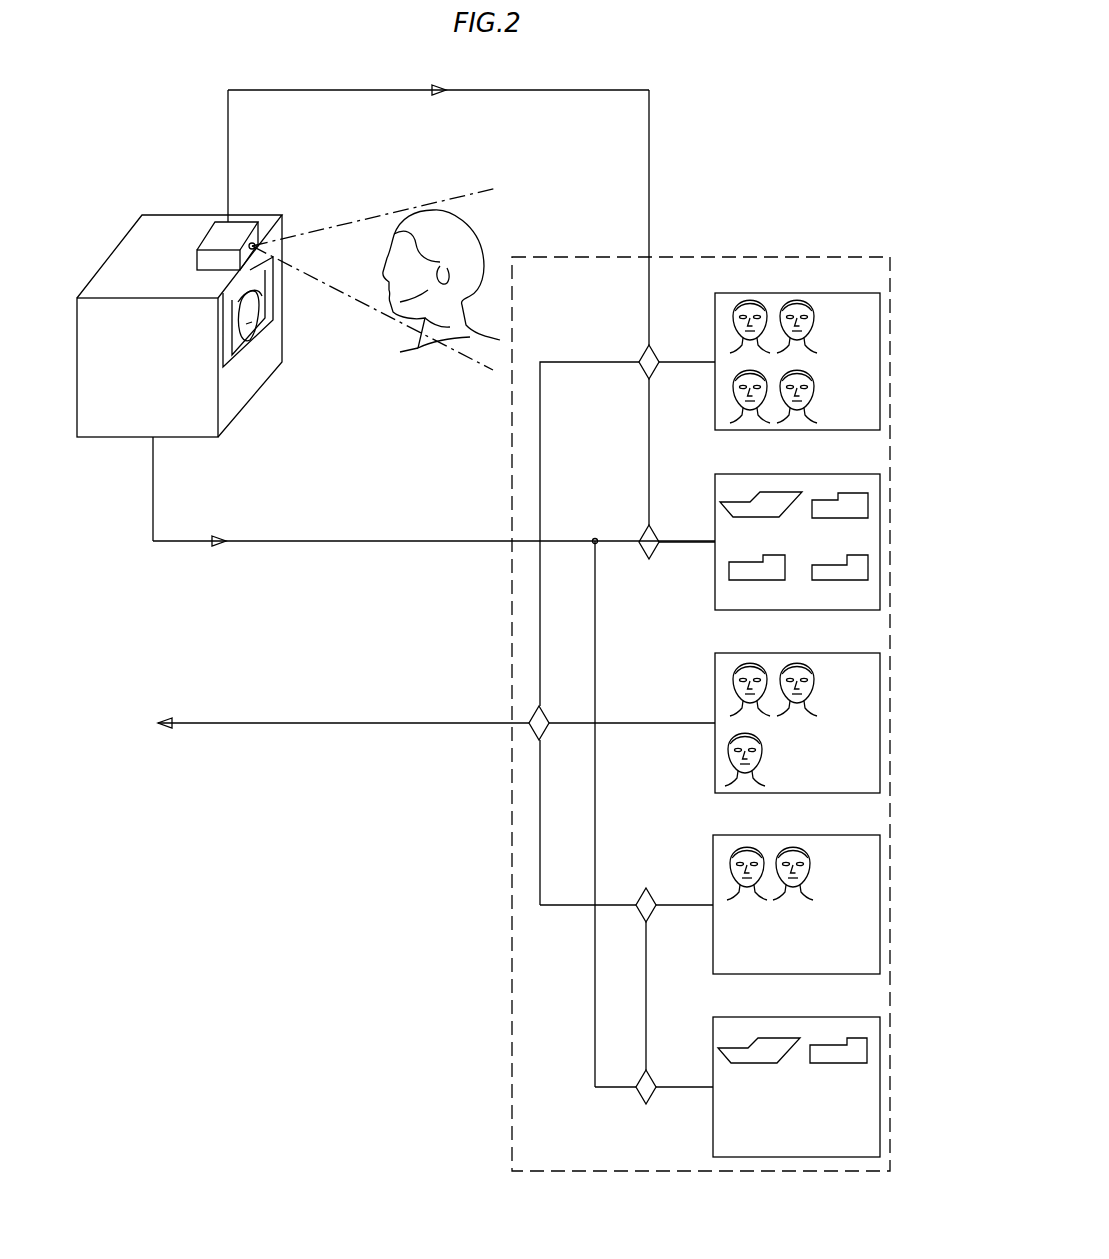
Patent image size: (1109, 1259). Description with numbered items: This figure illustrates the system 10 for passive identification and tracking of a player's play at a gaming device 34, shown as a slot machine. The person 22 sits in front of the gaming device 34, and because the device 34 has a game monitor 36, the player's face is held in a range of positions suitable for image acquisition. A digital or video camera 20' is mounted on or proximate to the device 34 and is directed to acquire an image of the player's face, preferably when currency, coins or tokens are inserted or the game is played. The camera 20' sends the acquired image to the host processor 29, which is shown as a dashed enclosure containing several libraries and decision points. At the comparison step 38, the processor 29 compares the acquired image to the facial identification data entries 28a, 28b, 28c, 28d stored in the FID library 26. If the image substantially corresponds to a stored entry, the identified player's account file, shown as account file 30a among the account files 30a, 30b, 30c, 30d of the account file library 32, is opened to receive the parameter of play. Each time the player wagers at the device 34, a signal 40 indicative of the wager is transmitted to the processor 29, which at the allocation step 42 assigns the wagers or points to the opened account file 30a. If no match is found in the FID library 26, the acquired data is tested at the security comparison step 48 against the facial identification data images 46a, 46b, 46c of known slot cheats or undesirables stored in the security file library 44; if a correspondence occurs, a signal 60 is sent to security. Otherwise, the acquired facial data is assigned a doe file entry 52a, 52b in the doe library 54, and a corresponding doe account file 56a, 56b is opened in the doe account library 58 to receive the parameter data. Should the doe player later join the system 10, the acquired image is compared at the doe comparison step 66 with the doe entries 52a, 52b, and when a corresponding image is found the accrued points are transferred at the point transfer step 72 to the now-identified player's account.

The system 10 is at (772, 168).
The digital or video camera 20' is at (199, 180).
The person 22 is at (495, 228).
The FID library 26 is at (799, 362).
The facial identification data entry 28a is at (735, 328).
The facial identification data entry 28b is at (815, 320).
The facial identification data entry 28c is at (735, 388).
The facial identification data entry 28d is at (795, 415).
The host processor 29 is at (778, 257).
The account file 30a is at (730, 510).
The account file 30b is at (838, 508).
The account file 30c is at (735, 568).
The account file 30d is at (820, 575).
The account file library 32 is at (799, 540).
The gaming device 34 is at (165, 388).
The game monitor 36 is at (240, 343).
The comparison step 38 is at (649, 345).
The signal 40 is at (445, 541).
The allocation step 42 is at (649, 525).
The security file library 44 is at (799, 705).
The facial identification data image 46a is at (735, 688).
The facial identification data image 46b is at (815, 680).
The facial identification data image 46c is at (730, 745).
The security comparison step 48 is at (545, 710).
The doe file entry 52a is at (728, 872).
The doe file entry 52b is at (812, 864).
The doe library 54 is at (798, 886).
The doe account file 56a is at (725, 1055).
The doe account file 56b is at (835, 1052).
The doe account library 58 is at (798, 1069).
The signal to security 60 is at (437, 723).
The doe comparison step 66 is at (640, 890).
The point transfer step 72 is at (640, 1102).